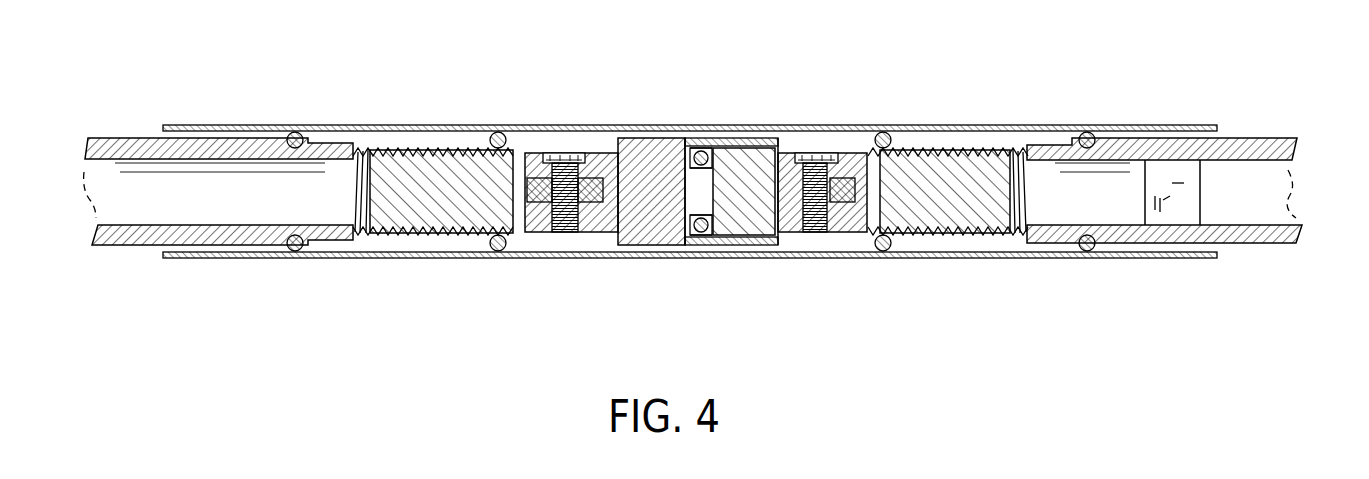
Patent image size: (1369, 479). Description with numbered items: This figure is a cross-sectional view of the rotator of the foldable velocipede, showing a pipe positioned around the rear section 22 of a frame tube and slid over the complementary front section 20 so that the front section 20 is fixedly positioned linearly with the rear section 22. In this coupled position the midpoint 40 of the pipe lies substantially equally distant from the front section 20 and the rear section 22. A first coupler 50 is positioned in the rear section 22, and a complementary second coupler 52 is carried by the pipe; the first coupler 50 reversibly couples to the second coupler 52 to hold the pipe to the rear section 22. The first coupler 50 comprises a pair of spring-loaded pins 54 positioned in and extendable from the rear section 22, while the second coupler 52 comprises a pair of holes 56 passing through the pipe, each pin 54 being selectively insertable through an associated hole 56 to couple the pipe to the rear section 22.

The front section 20 is at (122, 138).
The rear section 22 is at (1243, 138).
The midpoint 40 is at (597, 126).
The first coupler 50 is at (1178, 190).
The second coupler 52 is at (1178, 181).
The pins 54 is at (1165, 200).
The holes 56 is at (1160, 185).